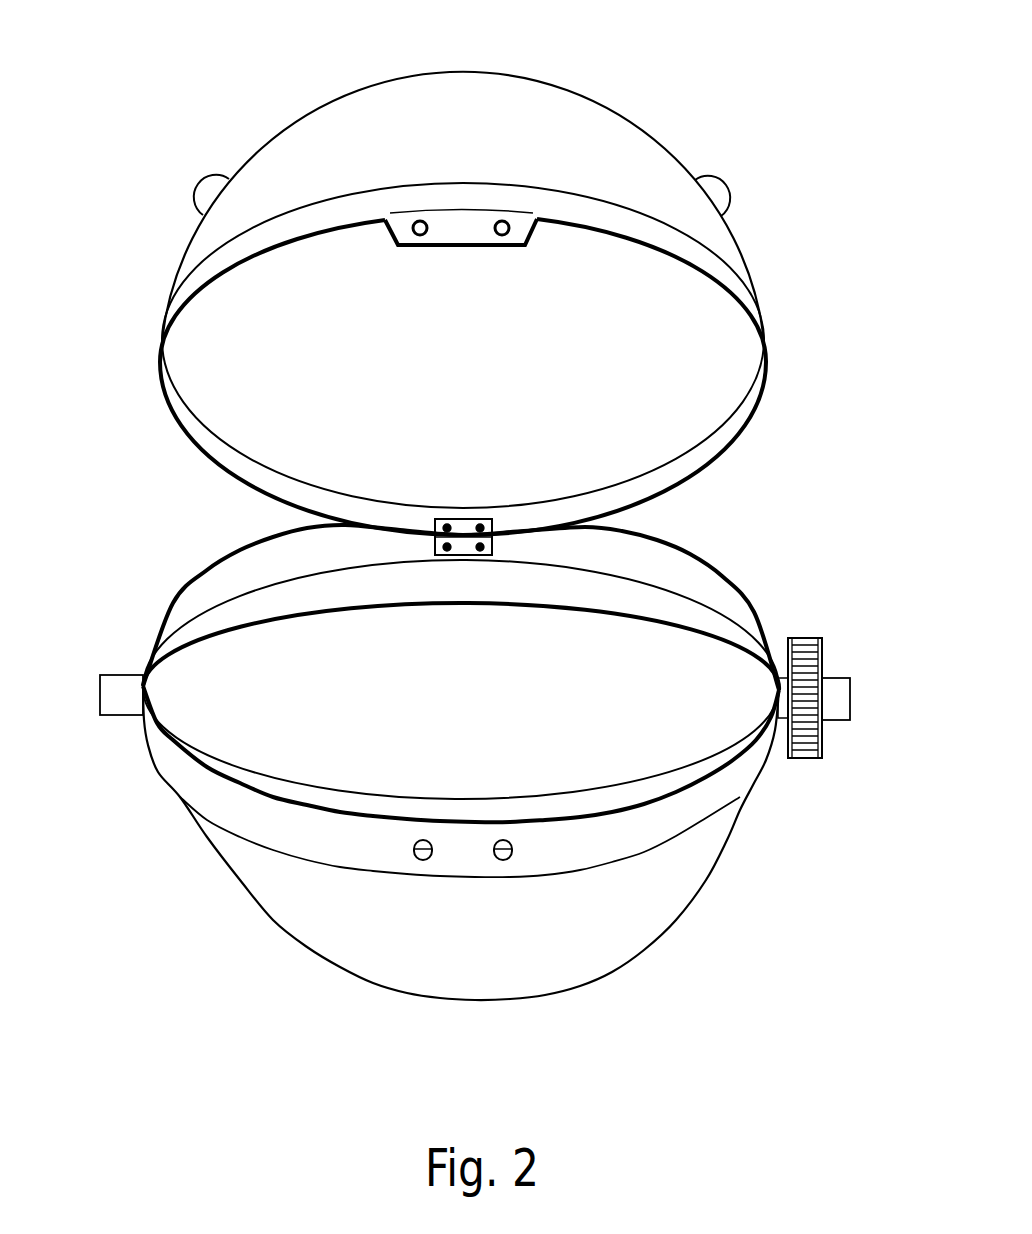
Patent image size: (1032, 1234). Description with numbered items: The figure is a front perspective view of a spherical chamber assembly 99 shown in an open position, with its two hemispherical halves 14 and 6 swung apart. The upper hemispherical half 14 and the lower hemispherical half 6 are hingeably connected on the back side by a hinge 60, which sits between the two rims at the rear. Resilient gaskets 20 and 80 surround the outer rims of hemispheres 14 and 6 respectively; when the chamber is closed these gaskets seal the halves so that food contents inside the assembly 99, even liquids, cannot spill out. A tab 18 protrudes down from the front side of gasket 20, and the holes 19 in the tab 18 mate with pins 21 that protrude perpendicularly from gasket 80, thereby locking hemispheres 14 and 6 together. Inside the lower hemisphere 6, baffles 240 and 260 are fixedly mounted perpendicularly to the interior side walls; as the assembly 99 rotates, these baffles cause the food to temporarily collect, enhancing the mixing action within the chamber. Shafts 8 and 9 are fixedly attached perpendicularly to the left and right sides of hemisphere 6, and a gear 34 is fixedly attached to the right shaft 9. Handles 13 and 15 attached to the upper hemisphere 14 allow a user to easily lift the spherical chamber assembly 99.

The hemispherical half 6 is at (611, 962).
The shaft 8 is at (100, 693).
The shaft 9 is at (851, 708).
The handle 13 is at (200, 186).
The hemispherical half 14 is at (549, 74).
The handle 15 is at (722, 186).
The tab 18 is at (450, 250).
The holes 19 is at (504, 236).
The resilient gasket 20 is at (208, 467).
The pins 21 is at (423, 857).
The gear 34 is at (809, 638).
The hinge 60 is at (470, 520).
The resilient gasket 80 is at (171, 600).
The spherical chamber assembly 99 is at (651, 107).
The baffle 240 is at (321, 612).
The baffle 260 is at (375, 792).